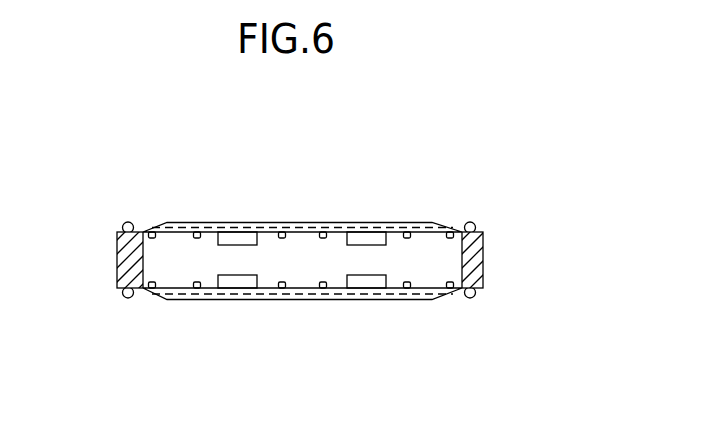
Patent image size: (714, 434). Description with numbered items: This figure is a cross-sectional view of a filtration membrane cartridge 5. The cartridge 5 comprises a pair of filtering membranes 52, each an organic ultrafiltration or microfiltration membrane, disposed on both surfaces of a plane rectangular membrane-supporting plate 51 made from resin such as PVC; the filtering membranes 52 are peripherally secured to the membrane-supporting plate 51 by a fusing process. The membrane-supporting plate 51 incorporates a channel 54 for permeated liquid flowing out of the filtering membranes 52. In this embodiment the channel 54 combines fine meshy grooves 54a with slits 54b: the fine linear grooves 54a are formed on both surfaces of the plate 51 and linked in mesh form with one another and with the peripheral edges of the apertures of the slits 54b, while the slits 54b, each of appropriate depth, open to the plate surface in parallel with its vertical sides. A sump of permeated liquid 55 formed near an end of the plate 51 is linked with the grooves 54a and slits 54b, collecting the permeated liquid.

The filtration membrane cartridge 5 is at (152, 301).
The membrane-supporting plate 51 is at (472, 229).
The filtering membrane 52 is at (197, 220).
The channel 54 is at (402, 163).
The fine meshy grooves 54a is at (323, 226).
The slits 54b is at (369, 240).
The sump of permeated liquid 55 is at (420, 258).